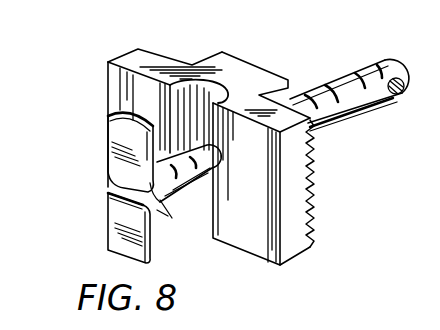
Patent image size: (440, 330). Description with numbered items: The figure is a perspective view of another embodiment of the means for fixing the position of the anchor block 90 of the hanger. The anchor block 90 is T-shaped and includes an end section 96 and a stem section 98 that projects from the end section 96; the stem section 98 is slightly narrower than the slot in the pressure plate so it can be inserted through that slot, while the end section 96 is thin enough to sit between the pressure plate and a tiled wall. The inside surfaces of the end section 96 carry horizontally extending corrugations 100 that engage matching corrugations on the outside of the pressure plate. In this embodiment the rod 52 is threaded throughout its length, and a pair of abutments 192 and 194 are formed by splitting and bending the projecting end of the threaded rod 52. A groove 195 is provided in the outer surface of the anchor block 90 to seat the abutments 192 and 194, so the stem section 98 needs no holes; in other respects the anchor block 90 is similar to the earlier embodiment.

The anchor block 90 is at (296, 256).
The end section 96 is at (135, 60).
The stem section 98 is at (260, 78).
The groove 195 is at (197, 95).
The corrugations 100 is at (312, 207).
The rod 52 is at (362, 68).
The abutment 192 is at (125, 152).
The abutment 194 is at (120, 226).